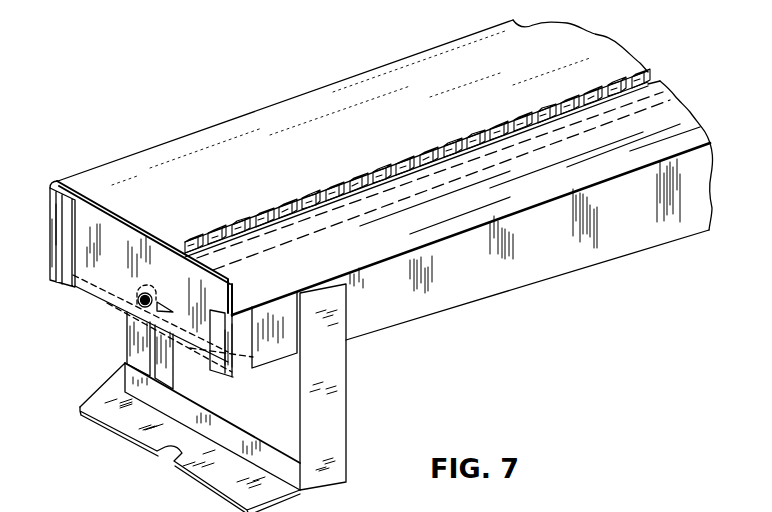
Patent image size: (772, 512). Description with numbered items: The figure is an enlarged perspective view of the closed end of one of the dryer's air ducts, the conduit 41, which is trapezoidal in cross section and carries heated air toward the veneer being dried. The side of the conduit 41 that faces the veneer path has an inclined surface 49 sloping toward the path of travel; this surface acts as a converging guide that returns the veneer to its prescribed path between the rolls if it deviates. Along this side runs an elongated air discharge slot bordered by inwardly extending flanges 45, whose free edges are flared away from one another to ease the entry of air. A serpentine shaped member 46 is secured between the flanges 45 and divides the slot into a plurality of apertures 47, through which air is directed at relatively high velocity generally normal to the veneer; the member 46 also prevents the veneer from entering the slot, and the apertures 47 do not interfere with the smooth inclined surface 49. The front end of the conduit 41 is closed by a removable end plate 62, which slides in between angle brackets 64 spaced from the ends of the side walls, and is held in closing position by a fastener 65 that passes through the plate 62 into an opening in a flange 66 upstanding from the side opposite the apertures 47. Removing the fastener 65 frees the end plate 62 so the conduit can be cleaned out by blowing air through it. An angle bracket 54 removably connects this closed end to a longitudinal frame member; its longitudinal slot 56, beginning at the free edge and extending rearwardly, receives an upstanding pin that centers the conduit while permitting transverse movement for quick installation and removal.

The air duct or conduit 41 is at (540, 280).
The inwardly extending flanges 45 is at (172, 256).
The serpentine shaped strip or member 46 is at (386, 173).
The apertures 47 is at (488, 134).
The inclined surface 49 is at (420, 56).
The angle bracket 54 is at (331, 376).
The longitudinal slot 56 is at (162, 450).
The removable end plate 62 is at (52, 185).
The angle brackets 64 is at (62, 246).
The fastener 65 is at (141, 303).
The flange 66 is at (137, 293).